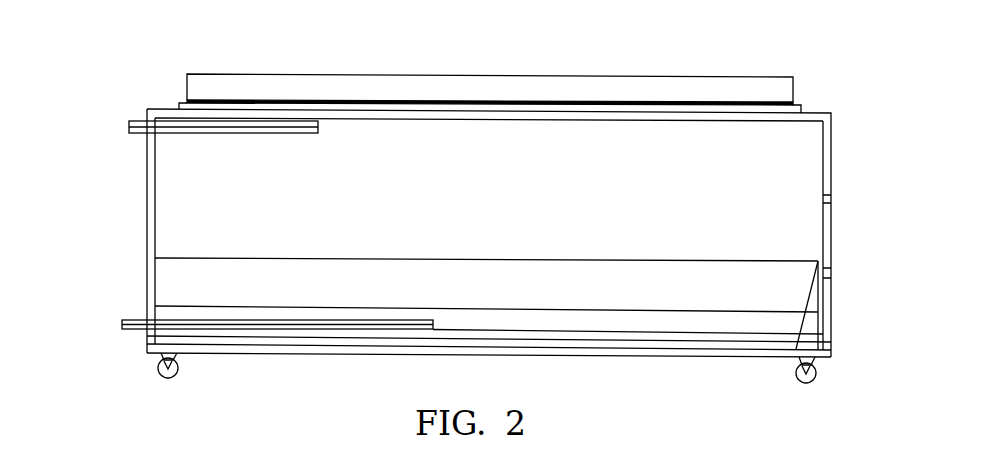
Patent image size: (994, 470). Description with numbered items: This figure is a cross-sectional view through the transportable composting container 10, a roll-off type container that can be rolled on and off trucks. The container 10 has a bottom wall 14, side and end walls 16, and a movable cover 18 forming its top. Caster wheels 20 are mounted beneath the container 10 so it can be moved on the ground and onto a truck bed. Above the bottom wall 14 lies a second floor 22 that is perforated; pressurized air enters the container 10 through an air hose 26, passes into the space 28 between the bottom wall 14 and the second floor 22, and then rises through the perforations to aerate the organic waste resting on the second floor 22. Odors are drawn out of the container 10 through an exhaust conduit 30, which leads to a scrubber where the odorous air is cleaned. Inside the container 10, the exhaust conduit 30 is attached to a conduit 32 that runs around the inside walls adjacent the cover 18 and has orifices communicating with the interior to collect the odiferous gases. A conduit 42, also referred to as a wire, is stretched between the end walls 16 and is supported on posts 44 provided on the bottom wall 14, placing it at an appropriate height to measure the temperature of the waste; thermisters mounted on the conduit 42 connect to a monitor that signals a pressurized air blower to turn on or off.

The transportable composting container 10 is at (827, 112).
The bottom wall 14 is at (462, 353).
The side and end walls 16 is at (146, 173).
The movable cover 18 is at (545, 78).
The caster wheels 20 is at (160, 375).
The second floor 22 is at (635, 310).
The air hose 26 is at (122, 320).
The space 28 is at (580, 322).
The exhaust conduit 30 is at (128, 123).
The conduit 32 is at (198, 128).
The conduit 42 is at (255, 257).
The posts 44 is at (812, 302).